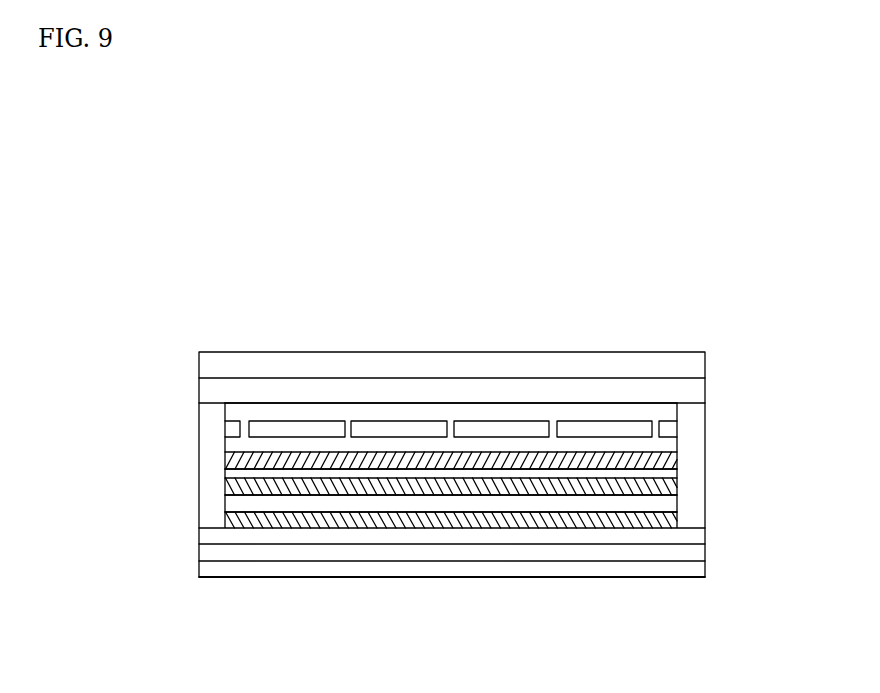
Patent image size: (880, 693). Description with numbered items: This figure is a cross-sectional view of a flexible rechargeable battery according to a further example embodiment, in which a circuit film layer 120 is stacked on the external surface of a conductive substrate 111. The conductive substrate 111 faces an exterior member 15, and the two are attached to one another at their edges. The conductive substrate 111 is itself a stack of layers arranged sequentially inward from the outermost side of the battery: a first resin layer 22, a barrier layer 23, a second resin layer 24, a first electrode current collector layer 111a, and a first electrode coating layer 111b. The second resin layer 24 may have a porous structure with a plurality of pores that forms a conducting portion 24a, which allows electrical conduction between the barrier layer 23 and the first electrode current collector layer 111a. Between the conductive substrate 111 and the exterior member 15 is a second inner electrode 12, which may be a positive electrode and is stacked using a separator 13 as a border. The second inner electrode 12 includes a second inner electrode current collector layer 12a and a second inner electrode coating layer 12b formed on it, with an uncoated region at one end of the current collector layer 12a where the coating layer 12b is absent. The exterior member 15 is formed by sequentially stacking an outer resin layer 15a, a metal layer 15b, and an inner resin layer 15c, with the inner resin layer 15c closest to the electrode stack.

The circuit film layer 120 is at (698, 361).
The conductive substrate 111 is at (80, 338).
The first resin layer 22 is at (210, 390).
The barrier layer 23 is at (228, 412).
The second resin layer 24 is at (233, 429).
The conducting portion 24a is at (660, 425).
The first electrode current collector layer 111a is at (235, 447).
The first electrode coating layer 111b is at (232, 464).
The separator 13 is at (665, 473).
The second inner electrode 12 is at (451, 573).
The second inner electrode current collector layer 12a is at (582, 492).
The second inner electrode coating layer 12b is at (628, 503).
The exterior member 15 is at (80, 510).
The outer resin layer 15a is at (202, 570).
The metal layer 15b is at (203, 553).
The inner resin layer 15c is at (200, 538).